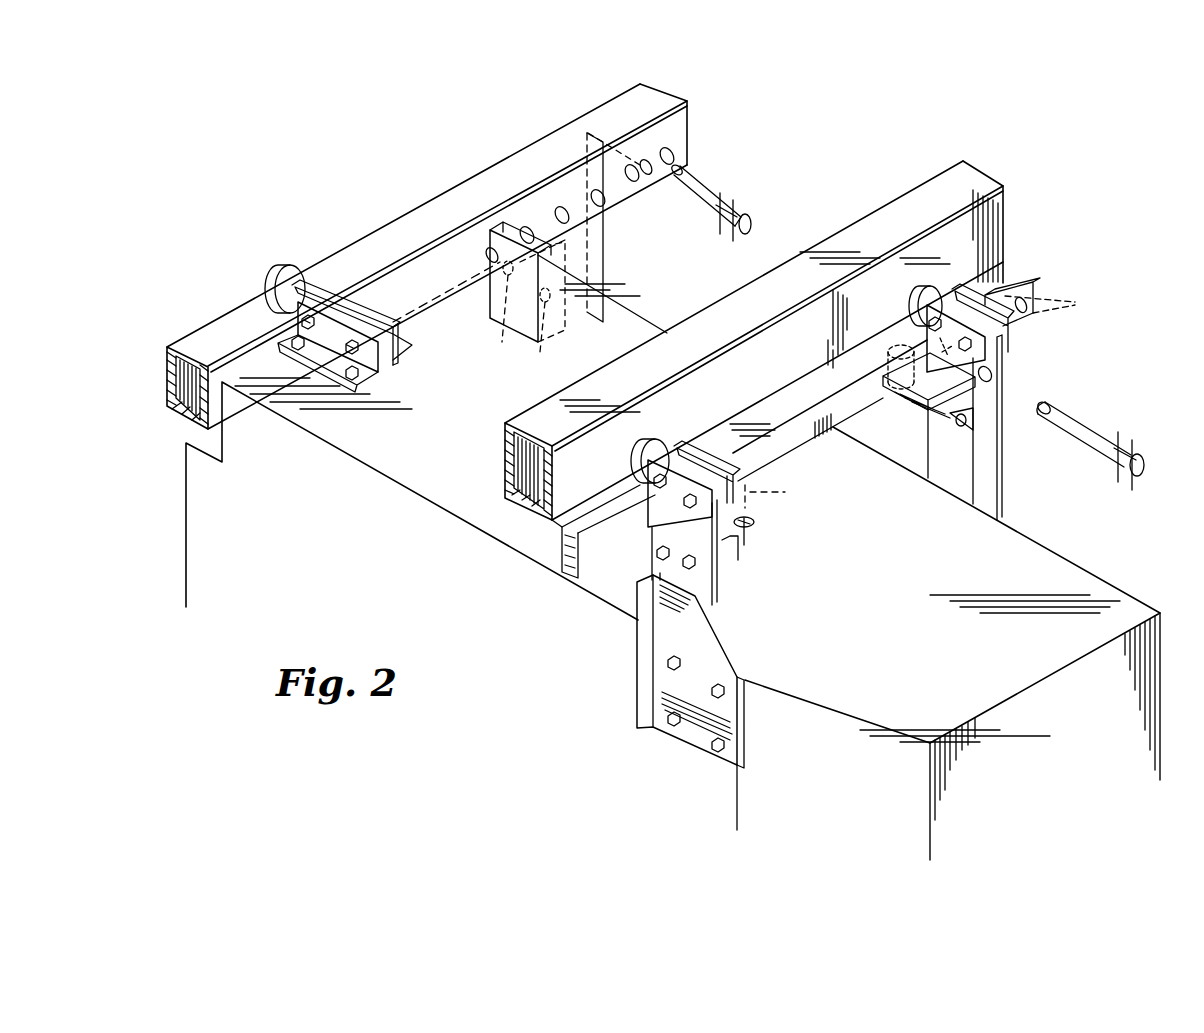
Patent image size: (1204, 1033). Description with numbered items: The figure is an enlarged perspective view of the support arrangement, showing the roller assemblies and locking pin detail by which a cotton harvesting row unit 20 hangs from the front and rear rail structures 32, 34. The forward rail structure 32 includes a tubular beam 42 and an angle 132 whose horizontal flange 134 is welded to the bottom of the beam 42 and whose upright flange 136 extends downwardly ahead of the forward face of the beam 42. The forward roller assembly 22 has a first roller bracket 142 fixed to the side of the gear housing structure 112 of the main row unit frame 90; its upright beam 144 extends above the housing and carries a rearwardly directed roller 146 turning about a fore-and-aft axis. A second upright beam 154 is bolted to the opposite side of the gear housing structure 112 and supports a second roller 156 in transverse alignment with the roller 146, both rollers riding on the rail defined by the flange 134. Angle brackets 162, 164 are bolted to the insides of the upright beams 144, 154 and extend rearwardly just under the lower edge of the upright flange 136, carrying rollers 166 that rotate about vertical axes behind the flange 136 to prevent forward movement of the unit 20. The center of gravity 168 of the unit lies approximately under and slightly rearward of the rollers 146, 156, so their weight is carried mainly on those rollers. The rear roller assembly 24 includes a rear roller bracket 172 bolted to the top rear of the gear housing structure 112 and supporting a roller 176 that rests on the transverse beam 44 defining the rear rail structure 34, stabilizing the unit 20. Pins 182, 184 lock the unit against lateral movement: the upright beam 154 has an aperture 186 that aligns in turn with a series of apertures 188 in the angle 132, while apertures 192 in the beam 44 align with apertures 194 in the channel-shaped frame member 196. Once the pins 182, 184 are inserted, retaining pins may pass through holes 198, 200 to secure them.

The cotton harvesting row unit 20 is at (1157, 566).
The forward roller assembly 22 is at (769, 614).
The rear roller assembly 24 is at (321, 310).
The front rail structure 32 is at (800, 392).
The rear rail structure 34 is at (210, 333).
The tubular beam 42 is at (925, 195).
The transverse beam 44 is at (386, 222).
The main row unit frame 90 is at (1000, 512).
The gear housing structure 112 is at (1070, 580).
The angle 132 is at (560, 548).
The horizontal flange 134 is at (560, 528).
The upright flange 136 is at (582, 560).
The first roller bracket 142 is at (738, 650).
The upright beam 144 is at (720, 596).
The roller 146 is at (648, 448).
The upright beam 154 is at (995, 470).
The second roller 156 is at (918, 295).
The angle bracket 162 is at (745, 533).
The angle bracket 164 is at (926, 420).
The roller 166 is at (892, 345).
The center of gravity 168 is at (787, 493).
The rear roller bracket 172 is at (411, 352).
The roller 176 is at (266, 287).
The pin 182 is at (1090, 438).
The pin 184 is at (702, 190).
The aperture 186 is at (995, 374).
The apertures 188 is at (1034, 315).
The apertures 192 is at (500, 240).
The apertures 194 is at (507, 346).
The channel-shaped frame member 196 is at (495, 232).
The hole 198 is at (1052, 410).
The hole 200 is at (675, 168).